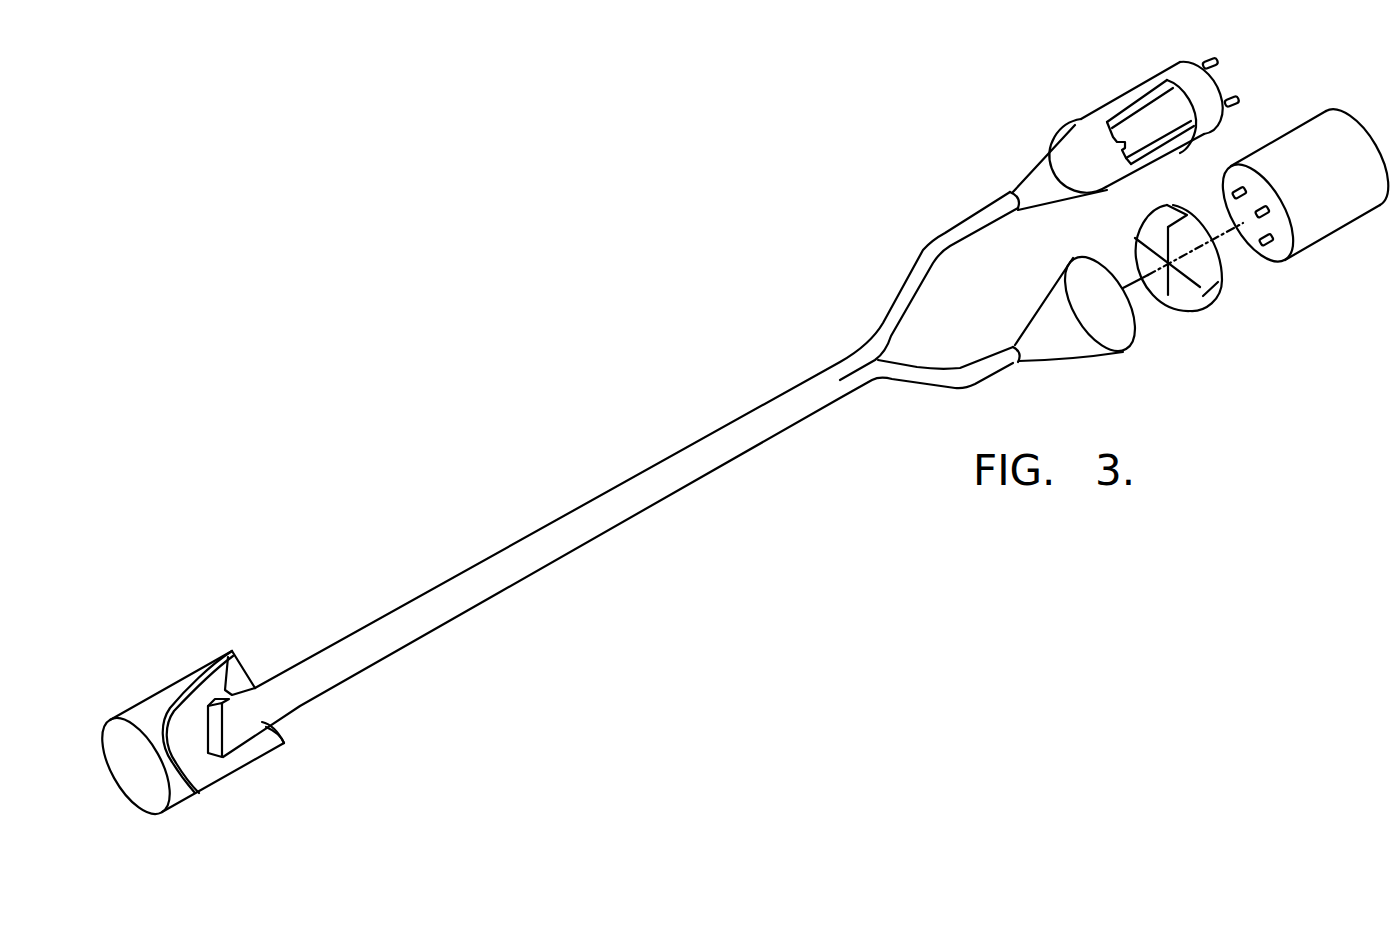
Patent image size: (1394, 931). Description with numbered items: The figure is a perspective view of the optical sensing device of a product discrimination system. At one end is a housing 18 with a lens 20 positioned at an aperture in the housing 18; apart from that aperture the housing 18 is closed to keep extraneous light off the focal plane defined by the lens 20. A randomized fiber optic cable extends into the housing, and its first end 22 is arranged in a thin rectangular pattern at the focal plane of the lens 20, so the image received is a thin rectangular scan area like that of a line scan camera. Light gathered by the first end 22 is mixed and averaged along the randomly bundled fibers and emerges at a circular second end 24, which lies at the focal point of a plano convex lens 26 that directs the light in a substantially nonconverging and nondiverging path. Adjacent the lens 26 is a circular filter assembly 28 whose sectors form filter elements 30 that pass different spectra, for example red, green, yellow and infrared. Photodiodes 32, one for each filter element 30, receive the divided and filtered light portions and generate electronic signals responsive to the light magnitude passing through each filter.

The housing 18 is at (147, 713).
The lens 20 is at (132, 768).
The first end 22 is at (240, 742).
The second end 24 is at (1012, 343).
The plano convex lens 26 is at (1083, 297).
The filter assembly 28 is at (1222, 286).
The filter elements 30 is at (1143, 258).
The photodiodes 32 is at (1320, 146).